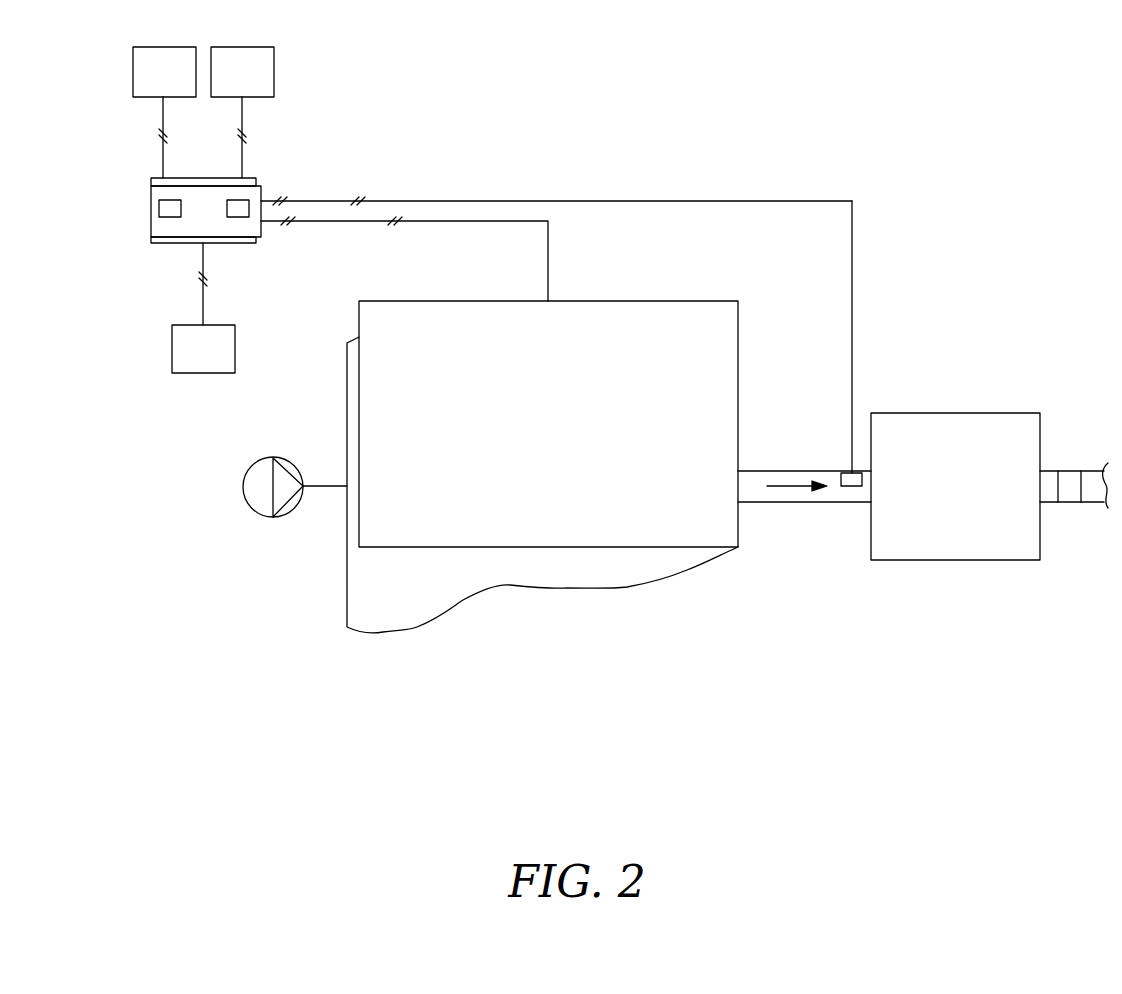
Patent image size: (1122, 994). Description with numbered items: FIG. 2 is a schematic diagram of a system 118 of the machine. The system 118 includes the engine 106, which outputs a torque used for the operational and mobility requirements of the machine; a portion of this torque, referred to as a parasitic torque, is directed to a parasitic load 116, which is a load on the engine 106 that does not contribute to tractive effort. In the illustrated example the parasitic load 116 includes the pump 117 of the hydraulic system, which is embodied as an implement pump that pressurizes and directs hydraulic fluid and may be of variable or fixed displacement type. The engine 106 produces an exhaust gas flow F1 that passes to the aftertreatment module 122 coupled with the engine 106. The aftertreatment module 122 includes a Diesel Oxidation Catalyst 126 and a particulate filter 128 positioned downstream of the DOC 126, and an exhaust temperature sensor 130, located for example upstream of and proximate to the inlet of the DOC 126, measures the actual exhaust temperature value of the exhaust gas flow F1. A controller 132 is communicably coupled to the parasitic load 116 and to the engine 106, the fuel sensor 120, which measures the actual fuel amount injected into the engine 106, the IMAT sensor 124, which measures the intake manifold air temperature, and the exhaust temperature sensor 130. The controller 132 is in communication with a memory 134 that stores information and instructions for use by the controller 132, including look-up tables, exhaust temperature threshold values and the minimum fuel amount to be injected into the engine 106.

The engine 106 is at (535, 435).
The parasitic load 116 is at (215, 483).
The pump 117 is at (277, 457).
The system 118 is at (952, 110).
The fuel sensor 120 is at (147, 84).
The aftertreatment module 122 is at (970, 370).
The IMAT sensor 124 is at (225, 84).
The Diesel Oxidation Catalyst 126 is at (938, 498).
The particulate filter 128 is at (1072, 478).
The exhaust temperature sensor 130 is at (848, 487).
The controller 132 is at (151, 200).
The memory 134 is at (186, 361).
The exhaust gas flow F1 is at (790, 490).